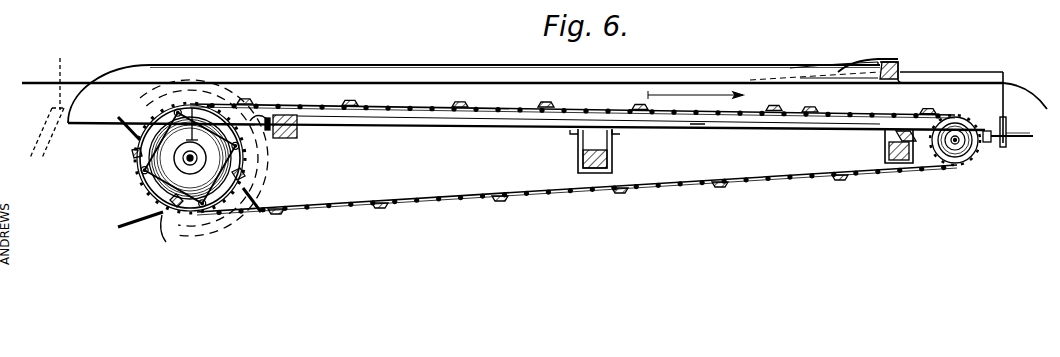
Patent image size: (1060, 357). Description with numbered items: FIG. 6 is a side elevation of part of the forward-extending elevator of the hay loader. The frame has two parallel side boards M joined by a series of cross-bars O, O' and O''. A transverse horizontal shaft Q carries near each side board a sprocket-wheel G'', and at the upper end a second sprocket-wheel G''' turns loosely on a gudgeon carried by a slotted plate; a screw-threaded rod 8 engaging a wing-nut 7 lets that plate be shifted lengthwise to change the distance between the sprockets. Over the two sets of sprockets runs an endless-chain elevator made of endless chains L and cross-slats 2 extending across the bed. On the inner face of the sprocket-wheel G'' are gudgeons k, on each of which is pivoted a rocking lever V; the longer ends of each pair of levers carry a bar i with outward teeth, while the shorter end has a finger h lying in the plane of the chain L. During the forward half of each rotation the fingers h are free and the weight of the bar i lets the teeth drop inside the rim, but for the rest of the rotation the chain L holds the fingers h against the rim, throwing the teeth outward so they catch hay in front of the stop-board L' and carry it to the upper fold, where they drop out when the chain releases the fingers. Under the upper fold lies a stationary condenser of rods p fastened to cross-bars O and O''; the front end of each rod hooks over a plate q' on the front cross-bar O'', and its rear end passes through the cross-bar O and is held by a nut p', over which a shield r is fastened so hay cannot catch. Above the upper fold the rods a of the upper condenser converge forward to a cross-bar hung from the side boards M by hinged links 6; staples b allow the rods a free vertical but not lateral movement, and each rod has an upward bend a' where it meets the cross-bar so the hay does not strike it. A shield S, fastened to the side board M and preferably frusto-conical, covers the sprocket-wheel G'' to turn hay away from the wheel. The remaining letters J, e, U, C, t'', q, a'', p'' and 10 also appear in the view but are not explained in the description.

The rods a is at (512, 74).
The endless chain L is at (535, 109).
The staples b is at (63, 68).
The stop-board L' is at (39, 133).
The lever arm J is at (126, 126).
The shield S is at (126, 213).
The rocking lever V is at (190, 158).
The rings e is at (190, 158).
The hub U is at (206, 160).
The shaft Q is at (194, 163).
The gudgeons k is at (148, 170).
The finger h is at (193, 110).
The sprocket-wheel G'' is at (262, 194).
The bar i is at (248, 186).
The connecting rod C is at (159, 234).
The shield r is at (260, 125).
The nut p' is at (273, 139).
The cross-bar O is at (295, 140).
The side boards M is at (573, 149).
The cross-slats 2 is at (548, 105).
The pitch distance t'' is at (695, 100).
The rods p is at (696, 135).
The cross-bar O' is at (612, 155).
The bearing block q is at (613, 149).
The upward bend a' is at (815, 72).
The hinged links 6 is at (851, 61).
The plate q' is at (907, 66).
The curved guide a'' is at (1027, 89).
The cross-bar O'' is at (885, 146).
The wedge p'' is at (915, 145).
The sprocket-wheel G''' is at (955, 156).
The bearing 10 is at (988, 143).
The wing-nut 7 is at (1006, 143).
The screw-threaded rod 8 is at (1031, 137).